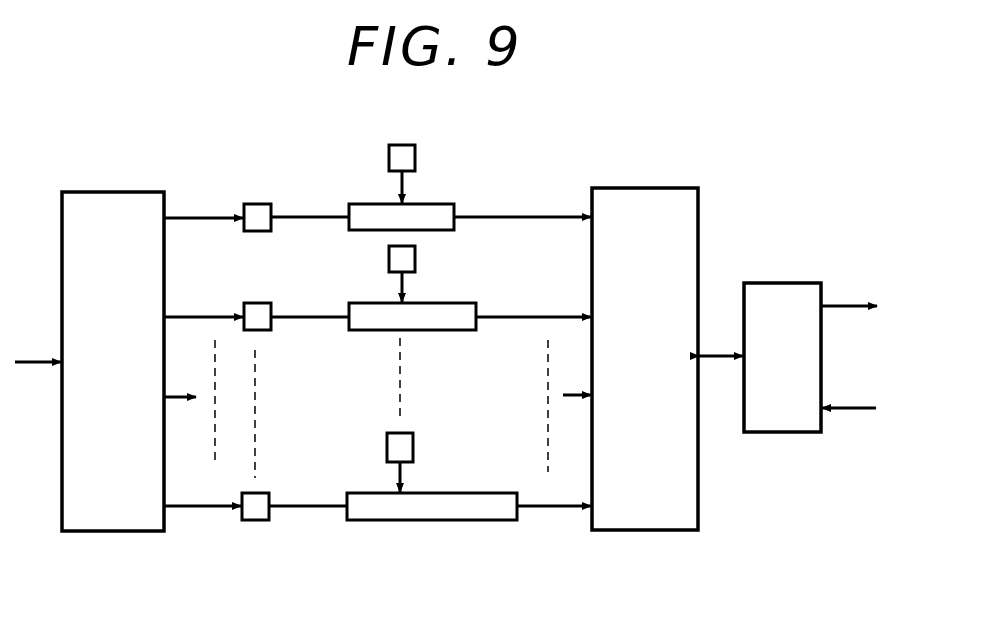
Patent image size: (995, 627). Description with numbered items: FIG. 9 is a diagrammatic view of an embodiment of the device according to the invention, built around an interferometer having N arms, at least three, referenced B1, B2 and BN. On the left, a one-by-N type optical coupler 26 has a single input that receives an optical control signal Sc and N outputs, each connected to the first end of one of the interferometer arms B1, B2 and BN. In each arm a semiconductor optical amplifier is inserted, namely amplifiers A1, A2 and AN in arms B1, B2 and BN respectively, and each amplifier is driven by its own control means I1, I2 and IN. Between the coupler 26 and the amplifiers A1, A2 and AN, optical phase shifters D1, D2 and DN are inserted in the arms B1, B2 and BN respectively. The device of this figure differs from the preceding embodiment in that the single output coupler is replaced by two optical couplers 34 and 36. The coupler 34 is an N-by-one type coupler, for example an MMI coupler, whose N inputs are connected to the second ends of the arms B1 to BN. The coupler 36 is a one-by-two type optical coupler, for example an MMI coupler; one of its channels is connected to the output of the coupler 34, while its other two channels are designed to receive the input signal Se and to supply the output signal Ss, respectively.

The optical coupler 26 is at (110, 520).
The optical coupler 34 is at (643, 520).
The optical coupler 36 is at (787, 422).
The optical phase shifter D1 is at (255, 206).
The optical phase shifter D2 is at (256, 305).
The optical phase shifter DN is at (255, 518).
The semiconductor optical amplifier A1 is at (437, 210).
The semiconductor optical amplifier A2 is at (464, 311).
The semiconductor optical amplifier AN is at (432, 511).
The control means I1 is at (401, 145).
The control means I2 is at (389, 258).
The control means IN is at (389, 448).
The interferometer arm B1 is at (207, 216).
The interferometer arm B2 is at (198, 315).
The interferometer arm BN is at (197, 508).
The optical control signal Sc is at (38, 348).
The output signal Ss is at (849, 292).
The input signal Se is at (849, 393).